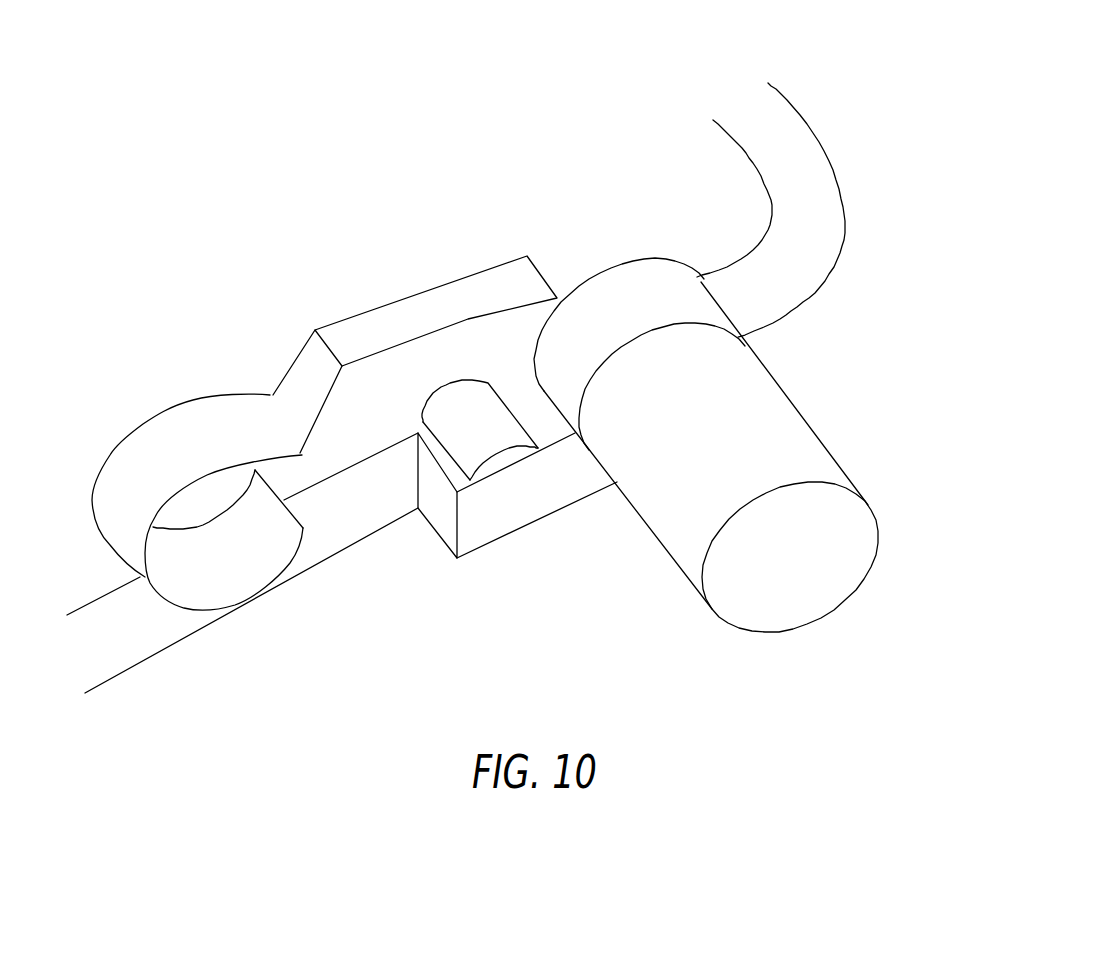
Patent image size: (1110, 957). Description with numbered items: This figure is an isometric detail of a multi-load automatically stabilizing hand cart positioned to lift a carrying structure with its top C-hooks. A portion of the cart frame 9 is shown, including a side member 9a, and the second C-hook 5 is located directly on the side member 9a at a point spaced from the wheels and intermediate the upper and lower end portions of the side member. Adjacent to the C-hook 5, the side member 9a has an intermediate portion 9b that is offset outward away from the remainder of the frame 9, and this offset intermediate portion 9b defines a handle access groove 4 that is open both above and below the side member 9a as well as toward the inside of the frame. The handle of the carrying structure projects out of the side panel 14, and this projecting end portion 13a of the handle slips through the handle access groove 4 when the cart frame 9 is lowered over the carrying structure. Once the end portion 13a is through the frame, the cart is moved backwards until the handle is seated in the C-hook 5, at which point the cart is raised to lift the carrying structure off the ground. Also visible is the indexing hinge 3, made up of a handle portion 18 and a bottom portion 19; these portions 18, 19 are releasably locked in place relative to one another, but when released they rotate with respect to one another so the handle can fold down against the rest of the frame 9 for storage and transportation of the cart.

The indexing hinge 3 is at (718, 395).
The handle access groove 4 is at (460, 482).
The second C-hook 5 is at (156, 452).
The frame 9 is at (792, 205).
The side member 9a is at (142, 663).
The intermediate portion 9b is at (443, 528).
The opposite end portion 13a is at (450, 418).
The side panel 14 is at (353, 337).
The handle portion 18 is at (633, 290).
The bottom portion 19 is at (675, 515).